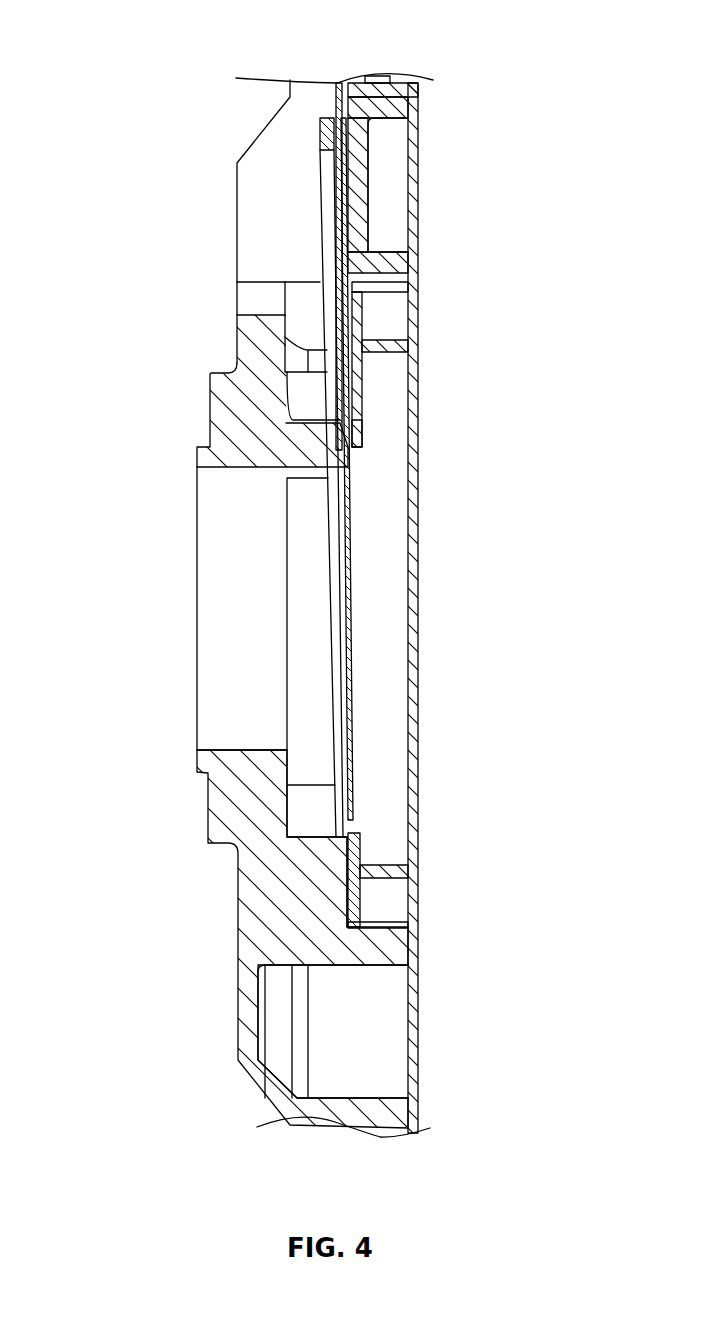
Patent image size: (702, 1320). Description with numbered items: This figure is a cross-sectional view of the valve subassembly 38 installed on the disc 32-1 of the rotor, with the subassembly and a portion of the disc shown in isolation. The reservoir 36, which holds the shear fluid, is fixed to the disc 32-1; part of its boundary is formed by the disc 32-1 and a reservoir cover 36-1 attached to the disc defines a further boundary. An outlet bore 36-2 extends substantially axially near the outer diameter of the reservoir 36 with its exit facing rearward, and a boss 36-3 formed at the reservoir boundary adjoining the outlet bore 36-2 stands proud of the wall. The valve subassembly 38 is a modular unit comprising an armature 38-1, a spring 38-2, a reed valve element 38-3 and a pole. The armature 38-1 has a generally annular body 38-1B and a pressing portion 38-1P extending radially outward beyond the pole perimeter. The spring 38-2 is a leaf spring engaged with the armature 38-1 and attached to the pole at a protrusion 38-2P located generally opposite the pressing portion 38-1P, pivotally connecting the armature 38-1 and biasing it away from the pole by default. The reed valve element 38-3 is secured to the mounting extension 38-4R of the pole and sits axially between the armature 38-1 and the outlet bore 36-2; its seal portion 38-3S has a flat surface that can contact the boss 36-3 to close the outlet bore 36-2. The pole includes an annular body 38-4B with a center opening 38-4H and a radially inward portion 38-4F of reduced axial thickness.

The reservoir 36 is at (387, 150).
The reservoir cover 36-1 is at (410, 170).
The outlet bore 36-2 is at (373, 110).
The boss 36-3 is at (338, 83).
The valve subassembly 38 is at (318, 200).
The armature 38-1 is at (328, 272).
The pressing portion 38-1P is at (318, 120).
The body 38-1B is at (338, 748).
The spring 38-2 is at (343, 320).
The protrusion 38-2P is at (345, 875).
The reed valve element 38-3 is at (352, 213).
The seal portion 38-3S is at (295, 82).
The mounting extension 38-4R is at (357, 420).
The center opening 38-4H is at (358, 833).
The radially inward portion 38-4F is at (365, 855).
The body 38-4B is at (362, 910).
The disc 32-1 is at (268, 212).